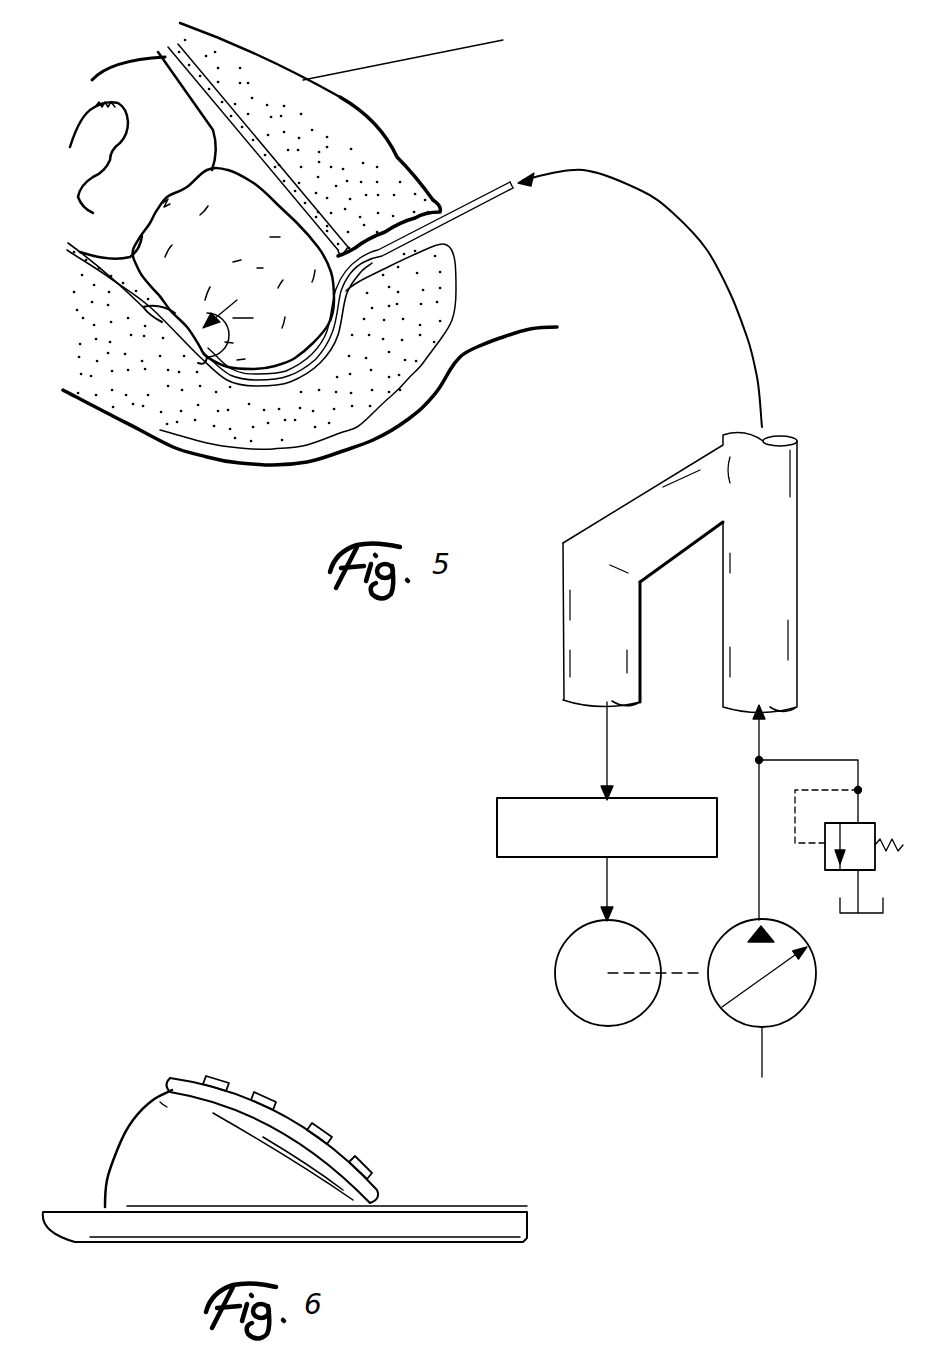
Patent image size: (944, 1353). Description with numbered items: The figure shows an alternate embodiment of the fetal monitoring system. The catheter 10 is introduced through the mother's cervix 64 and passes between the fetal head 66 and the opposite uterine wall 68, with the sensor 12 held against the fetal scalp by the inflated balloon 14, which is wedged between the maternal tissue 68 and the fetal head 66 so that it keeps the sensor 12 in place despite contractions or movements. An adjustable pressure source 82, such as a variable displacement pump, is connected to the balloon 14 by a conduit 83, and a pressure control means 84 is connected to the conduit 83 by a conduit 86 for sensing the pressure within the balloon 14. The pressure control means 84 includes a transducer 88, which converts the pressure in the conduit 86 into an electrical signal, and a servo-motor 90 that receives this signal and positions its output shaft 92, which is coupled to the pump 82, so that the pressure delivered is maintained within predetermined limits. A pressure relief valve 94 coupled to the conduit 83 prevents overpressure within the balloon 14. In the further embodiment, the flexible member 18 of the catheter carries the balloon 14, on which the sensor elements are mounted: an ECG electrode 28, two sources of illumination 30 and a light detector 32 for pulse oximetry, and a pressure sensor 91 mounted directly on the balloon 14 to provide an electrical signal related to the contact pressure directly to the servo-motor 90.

In FIG. 5, the catheter 10 is at (383, 265).
In FIG. 5, the sensor 12 is at (198, 364).
In FIG. 5, the balloon 14 is at (143, 307).
In FIG. 6, the balloon 14 is at (125, 1137).
In FIG. 6, the flexible member 18 is at (525, 1240).
In FIG. 6, the ECG electrode 28 is at (323, 1130).
In FIG. 6, the sources of illumination 30 is at (268, 1092).
In FIG. 6, the light detector 32 is at (365, 1162).
In FIG. 5, the cervix 64 is at (363, 247).
In FIG. 5, the fetal head 66 is at (298, 300).
In FIG. 5, the uterine wall 68 is at (226, 435).
In FIG. 5, the adjustable pressure source 82 is at (804, 975).
In FIG. 5, the conduit 83 is at (773, 533).
In FIG. 5, the pressure control means 84 is at (565, 931).
In FIG. 5, the conduit 86 is at (658, 488).
In FIG. 5, the transducer 88 is at (540, 797).
In FIG. 5, the servo-motor 90 is at (610, 997).
In FIG. 6, the pressure sensor 91 is at (213, 1075).
In FIG. 5, the output shaft 92 is at (700, 973).
In FIG. 5, the pressure relief valve 94 is at (873, 822).